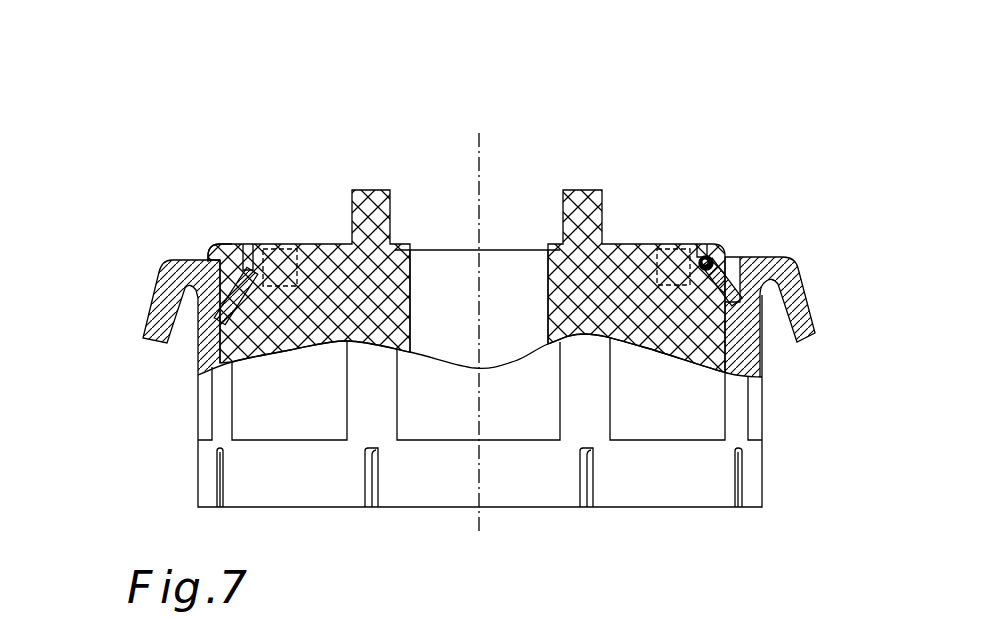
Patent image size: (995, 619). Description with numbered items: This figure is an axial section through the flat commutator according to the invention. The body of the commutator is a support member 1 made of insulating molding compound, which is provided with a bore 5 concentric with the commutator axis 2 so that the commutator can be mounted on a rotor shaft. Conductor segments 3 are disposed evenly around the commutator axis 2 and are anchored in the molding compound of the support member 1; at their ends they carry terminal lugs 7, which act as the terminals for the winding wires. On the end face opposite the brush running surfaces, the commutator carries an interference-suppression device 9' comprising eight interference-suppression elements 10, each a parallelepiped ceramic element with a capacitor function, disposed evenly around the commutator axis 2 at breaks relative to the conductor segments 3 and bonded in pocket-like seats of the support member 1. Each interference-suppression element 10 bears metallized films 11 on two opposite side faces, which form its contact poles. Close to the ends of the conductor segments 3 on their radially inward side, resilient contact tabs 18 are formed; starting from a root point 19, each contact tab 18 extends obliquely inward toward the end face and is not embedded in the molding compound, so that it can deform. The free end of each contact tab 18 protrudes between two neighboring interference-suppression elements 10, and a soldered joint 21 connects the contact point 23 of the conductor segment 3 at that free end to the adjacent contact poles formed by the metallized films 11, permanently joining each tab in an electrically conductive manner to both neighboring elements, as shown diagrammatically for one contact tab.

The support member 1 is at (593, 253).
The commutator axis 2 is at (477, 163).
The conductor segments 3 is at (213, 353).
The bore 5 is at (518, 285).
The terminal lugs 7 is at (812, 298).
The interference-suppression device 9' is at (187, 165).
The interference-suppression elements 10 is at (255, 247).
The metallized films 11 is at (700, 252).
The resilient contact tabs 18 is at (747, 242).
The root point 19 is at (221, 303).
The soldered joint 21 is at (705, 250).
The contact point 23 is at (253, 247).